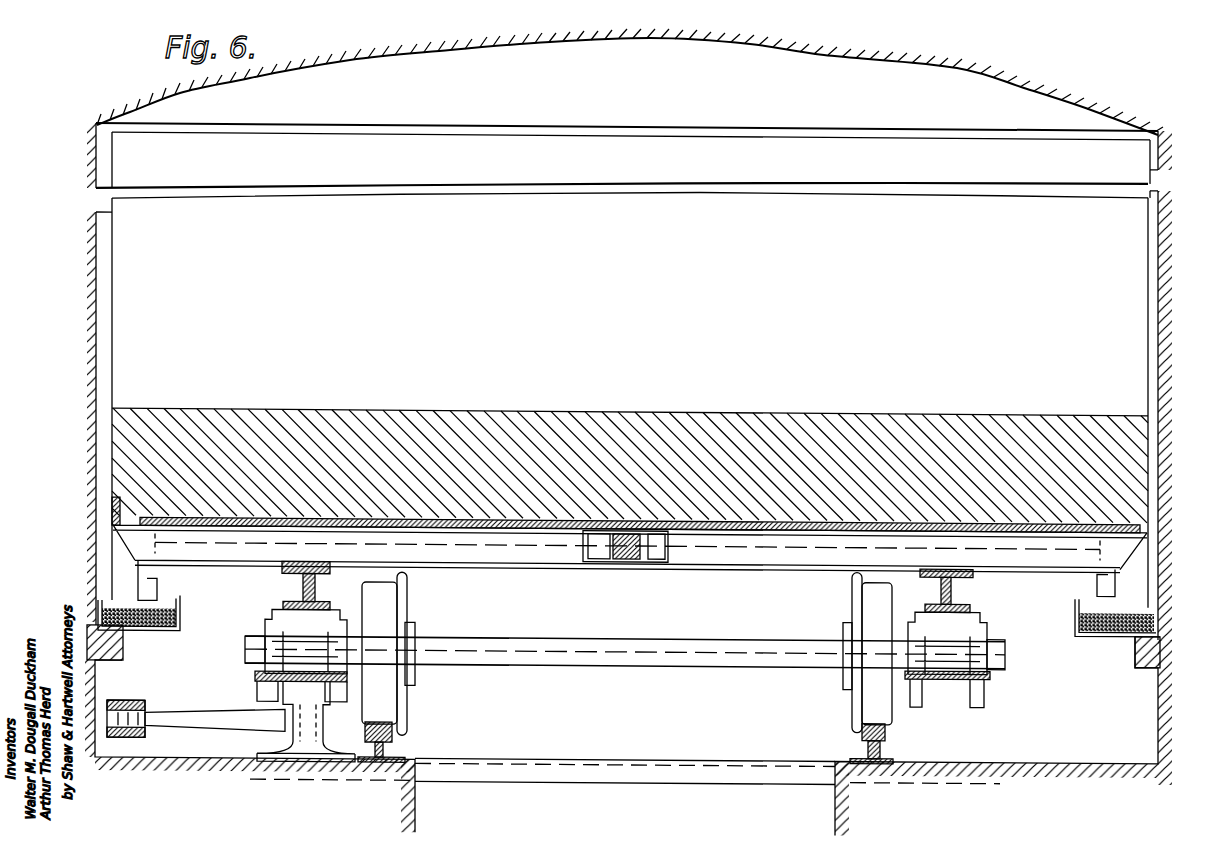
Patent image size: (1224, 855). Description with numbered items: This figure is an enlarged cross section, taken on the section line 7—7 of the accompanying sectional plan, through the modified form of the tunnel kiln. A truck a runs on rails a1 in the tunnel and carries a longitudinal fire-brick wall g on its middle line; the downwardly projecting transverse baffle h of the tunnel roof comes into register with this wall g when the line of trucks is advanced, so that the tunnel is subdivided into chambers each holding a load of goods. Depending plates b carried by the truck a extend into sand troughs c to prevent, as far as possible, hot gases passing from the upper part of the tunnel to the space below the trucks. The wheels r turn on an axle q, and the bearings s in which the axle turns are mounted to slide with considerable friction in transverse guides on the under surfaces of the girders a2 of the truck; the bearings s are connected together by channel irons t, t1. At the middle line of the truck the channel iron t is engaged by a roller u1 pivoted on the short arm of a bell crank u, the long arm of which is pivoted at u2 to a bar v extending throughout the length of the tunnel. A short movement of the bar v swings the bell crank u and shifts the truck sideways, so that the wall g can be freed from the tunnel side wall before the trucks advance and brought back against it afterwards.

The transverse baffle h is at (629, 112).
The longitudinal fire-brick wall g is at (629, 412).
The truck a is at (512, 422).
The section line 7 is at (95, 627).
The depending plate b is at (145, 592).
The sand trough c is at (629, 628).
The axle q is at (706, 662).
The wheel r is at (862, 700).
The bearing s is at (262, 630).
The girder a2 is at (302, 583).
The channel iron t is at (275, 688).
The channel iron t1 is at (978, 698).
The roller u1 is at (322, 700).
The rail a1 is at (395, 748).
The bell crank u is at (232, 718).
The bar v is at (138, 740).
The pivot u2 is at (115, 704).